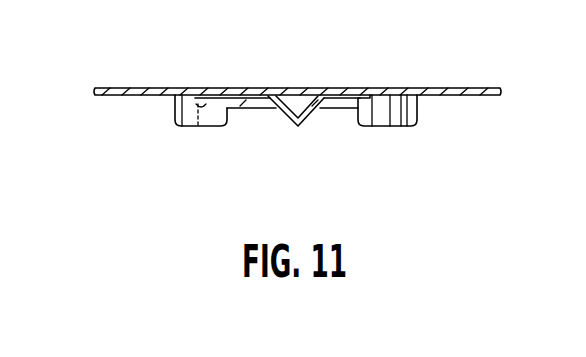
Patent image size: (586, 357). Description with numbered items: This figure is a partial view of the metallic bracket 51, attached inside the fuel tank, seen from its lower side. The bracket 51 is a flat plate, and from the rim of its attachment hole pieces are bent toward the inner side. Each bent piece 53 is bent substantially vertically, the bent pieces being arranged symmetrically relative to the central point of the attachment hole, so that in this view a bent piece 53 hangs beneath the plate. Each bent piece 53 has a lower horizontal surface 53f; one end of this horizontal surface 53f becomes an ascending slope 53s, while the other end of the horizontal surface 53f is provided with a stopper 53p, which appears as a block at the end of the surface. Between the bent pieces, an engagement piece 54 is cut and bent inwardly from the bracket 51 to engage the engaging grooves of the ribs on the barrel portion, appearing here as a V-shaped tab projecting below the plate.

The bracket 51 is at (471, 88).
The bent piece 53 is at (372, 103).
The ascending slope 53s is at (199, 106).
The stopper 53p is at (200, 122).
The lower horizontal surface 53f is at (262, 115).
The engagement piece 54 is at (315, 105).